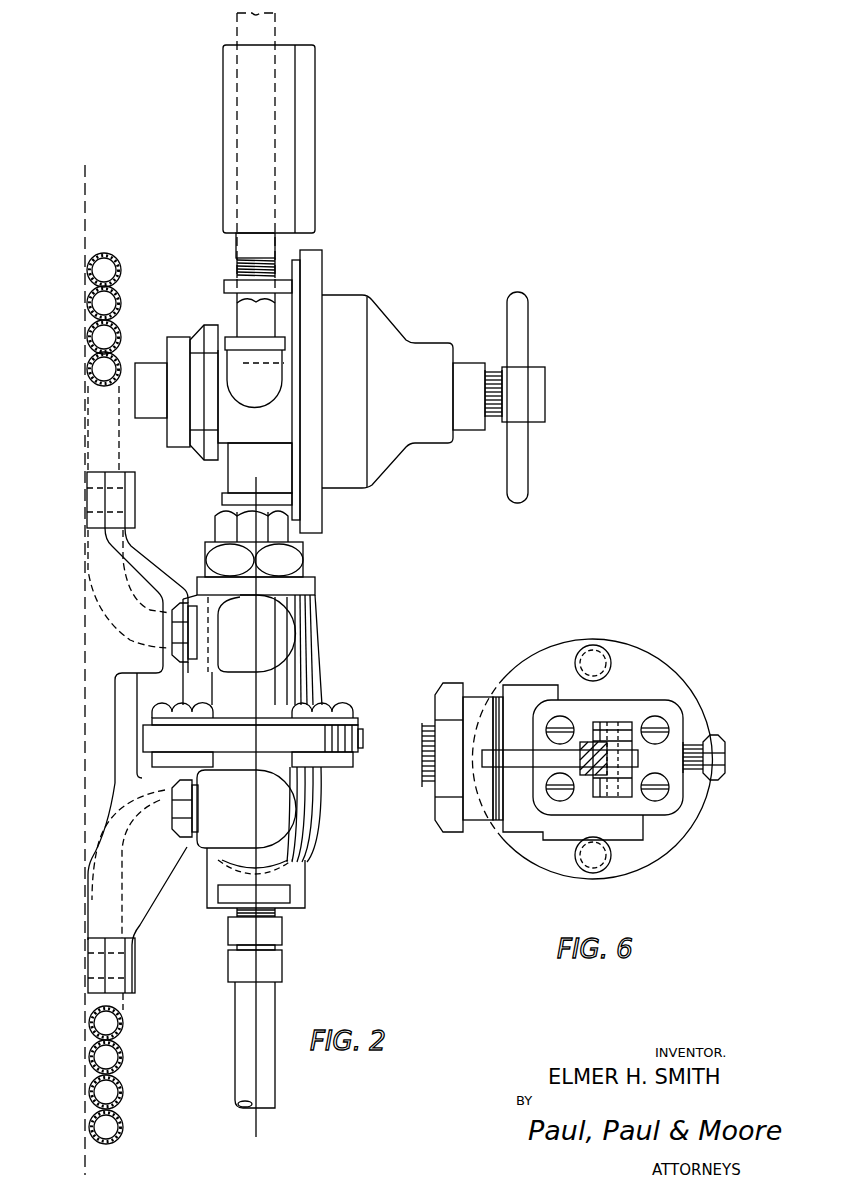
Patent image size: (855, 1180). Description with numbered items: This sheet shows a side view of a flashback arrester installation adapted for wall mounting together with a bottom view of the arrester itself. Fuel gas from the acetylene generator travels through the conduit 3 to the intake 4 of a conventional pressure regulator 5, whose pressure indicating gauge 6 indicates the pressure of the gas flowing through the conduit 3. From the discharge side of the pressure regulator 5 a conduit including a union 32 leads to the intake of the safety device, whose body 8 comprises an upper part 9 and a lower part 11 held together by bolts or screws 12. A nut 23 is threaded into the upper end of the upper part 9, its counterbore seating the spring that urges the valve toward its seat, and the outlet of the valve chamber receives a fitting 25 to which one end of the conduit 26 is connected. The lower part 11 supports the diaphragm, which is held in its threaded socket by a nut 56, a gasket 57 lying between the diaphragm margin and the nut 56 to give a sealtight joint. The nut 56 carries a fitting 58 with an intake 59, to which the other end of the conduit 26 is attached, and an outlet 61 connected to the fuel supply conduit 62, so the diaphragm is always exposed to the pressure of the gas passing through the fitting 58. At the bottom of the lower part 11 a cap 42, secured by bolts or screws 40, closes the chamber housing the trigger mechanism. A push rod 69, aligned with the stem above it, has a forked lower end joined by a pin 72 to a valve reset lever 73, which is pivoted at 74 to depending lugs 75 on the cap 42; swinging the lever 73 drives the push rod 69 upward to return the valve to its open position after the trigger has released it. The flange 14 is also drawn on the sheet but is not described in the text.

In FIG. 2, the conduit 3 is at (237, 30).
In FIG. 2, the intake 4 is at (240, 363).
In FIG. 2, the pressure regulator 5 is at (352, 310).
In FIG. 2, the pressure indicating gauge 6 is at (308, 147).
In FIG. 2, the body 8 is at (363, 747).
In FIG. 6, the body 8 is at (689, 680).
In FIG. 2, the upper part 9 is at (317, 618).
In FIG. 2, the lower part 11 is at (317, 800).
In FIG. 6, the lower part 11 is at (632, 833).
In FIG. 2, the bolts or screws 12 is at (328, 707).
In FIG. 2, the flange 14 is at (363, 730).
In FIG. 2, the nut 23 is at (297, 562).
In FIG. 2, the fitting 25 is at (213, 607).
In FIG. 2, the conduit 26 is at (88, 365).
In FIG. 2, the union 32 is at (225, 530).
In FIG. 6, the bolts or screws 40 is at (558, 782).
In FIG. 2, the cap 42 is at (298, 893).
In FIG. 6, the cap 42 is at (620, 707).
In FIG. 6, the nut 56 is at (450, 687).
In FIG. 6, the gasket 57 is at (716, 740).
In FIG. 2, the fitting 58 is at (277, 822).
In FIG. 6, the fitting 58 is at (432, 778).
In FIG. 2, the intake 59 is at (173, 810).
In FIG. 2, the outlet 61 is at (280, 867).
In FIG. 2, the fuel supply conduit 62 is at (267, 1007).
In FIG. 6, the push rod 69 is at (602, 743).
In FIG. 6, the pin 72 is at (595, 768).
In FIG. 6, the valve reset lever 73 is at (517, 768).
In FIG. 6, the pivot 74 is at (602, 722).
In FIG. 6, the depending lugs 75 is at (627, 720).